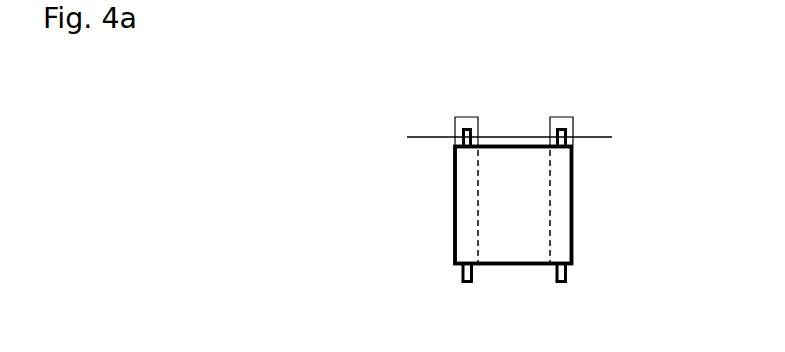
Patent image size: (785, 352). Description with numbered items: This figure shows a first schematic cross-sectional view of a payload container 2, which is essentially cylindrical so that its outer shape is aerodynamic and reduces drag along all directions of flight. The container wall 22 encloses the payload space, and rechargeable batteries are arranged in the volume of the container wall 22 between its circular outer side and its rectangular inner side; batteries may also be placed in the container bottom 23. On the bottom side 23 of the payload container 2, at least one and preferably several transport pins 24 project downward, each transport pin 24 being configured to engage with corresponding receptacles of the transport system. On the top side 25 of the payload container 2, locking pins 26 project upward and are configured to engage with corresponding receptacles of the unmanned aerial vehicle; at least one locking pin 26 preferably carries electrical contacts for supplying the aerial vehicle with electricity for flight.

The payload container 2 is at (398, 186).
The container wall 22 is at (573, 205).
The container bottom 23 is at (520, 263).
The transport pin 24 is at (465, 275).
The top side 25 is at (512, 142).
The locking pin 26 is at (568, 137).